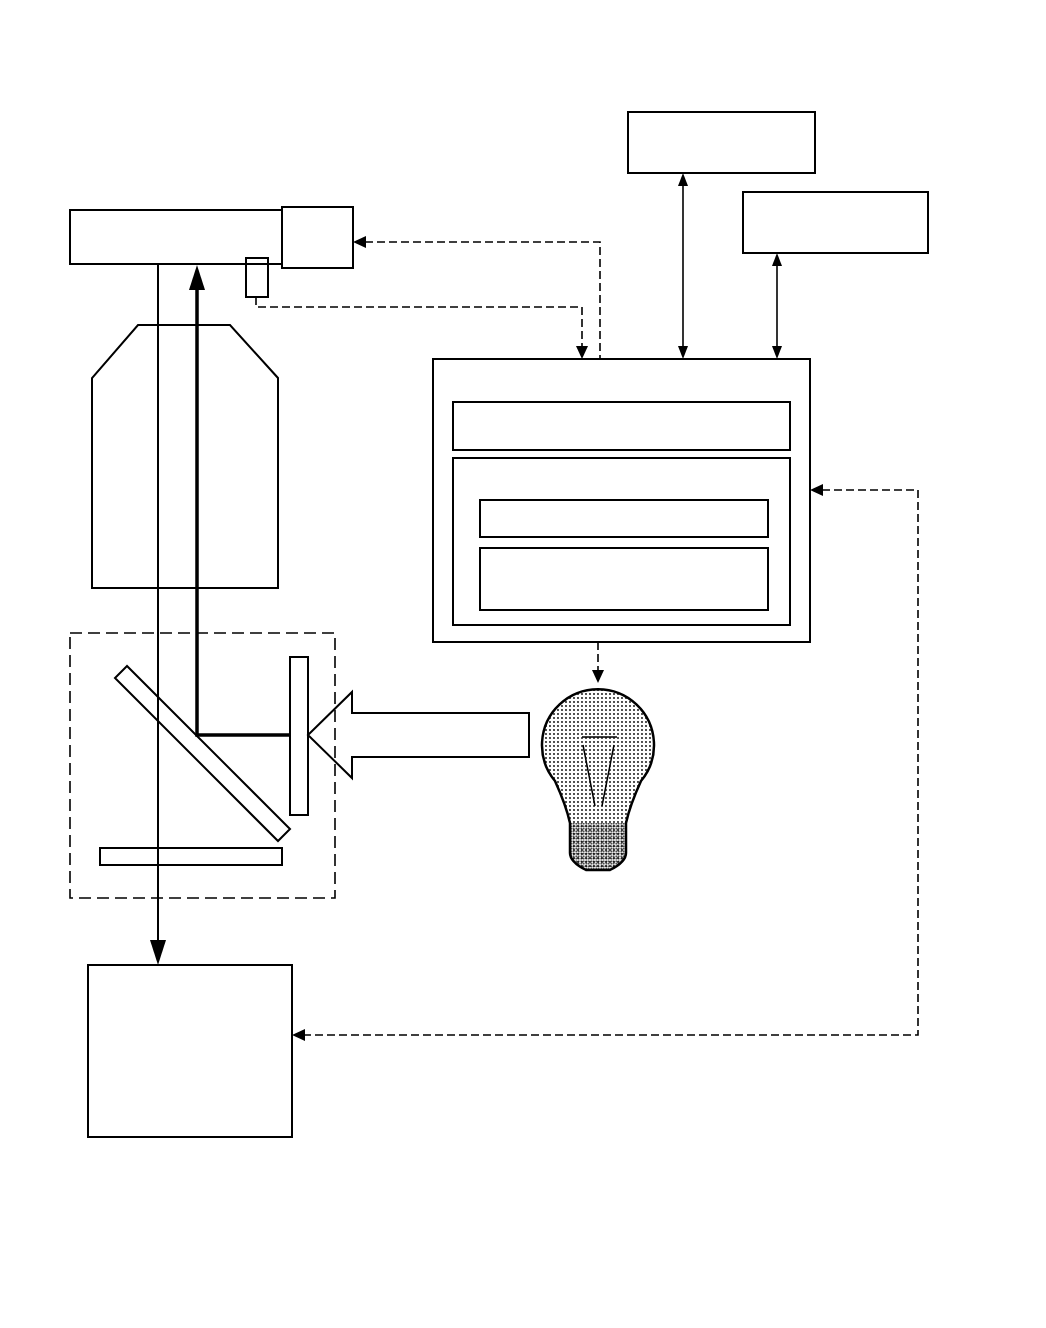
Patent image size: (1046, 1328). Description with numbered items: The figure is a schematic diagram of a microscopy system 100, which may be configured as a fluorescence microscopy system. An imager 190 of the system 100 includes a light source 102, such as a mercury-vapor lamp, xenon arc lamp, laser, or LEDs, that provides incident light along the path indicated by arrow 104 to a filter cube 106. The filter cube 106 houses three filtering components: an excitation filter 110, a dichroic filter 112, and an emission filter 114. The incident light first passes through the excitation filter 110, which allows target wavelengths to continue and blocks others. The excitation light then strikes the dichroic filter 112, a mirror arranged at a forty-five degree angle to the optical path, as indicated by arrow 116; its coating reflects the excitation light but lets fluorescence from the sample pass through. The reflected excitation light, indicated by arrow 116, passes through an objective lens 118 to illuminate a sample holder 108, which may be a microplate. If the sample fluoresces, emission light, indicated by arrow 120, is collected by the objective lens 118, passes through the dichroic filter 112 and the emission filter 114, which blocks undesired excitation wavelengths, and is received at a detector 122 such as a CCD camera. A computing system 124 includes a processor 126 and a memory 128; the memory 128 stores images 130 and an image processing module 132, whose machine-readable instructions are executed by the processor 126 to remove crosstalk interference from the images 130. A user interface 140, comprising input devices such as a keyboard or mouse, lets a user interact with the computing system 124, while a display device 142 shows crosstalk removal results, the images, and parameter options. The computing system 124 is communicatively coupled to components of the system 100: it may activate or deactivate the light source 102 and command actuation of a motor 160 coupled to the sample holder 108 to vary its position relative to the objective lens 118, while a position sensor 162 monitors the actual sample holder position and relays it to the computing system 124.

The microscopy system 100 is at (592, 36).
The imager 190 is at (400, 172).
The light source 102 is at (622, 690).
The arrow indicating path of incident light 104 is at (418, 712).
The filter cube 106 is at (298, 633).
The sample holder 108 is at (176, 237).
The excitation filter 110 is at (290, 698).
The dichroic filter 112 is at (203, 768).
The emission filter 114 is at (203, 867).
The arrow indicating excitation light 116 is at (198, 443).
The objective lens 118 is at (278, 392).
The arrow indicating emission light 120 is at (157, 445).
The detector 122 is at (190, 1051).
The computing system 124 is at (621, 500).
The processor 126 is at (621, 426).
The memory 128 is at (621, 541).
The images 130 is at (624, 518).
The image processing module 132 is at (624, 579).
The user interface 140 is at (721, 142).
The display device 142 is at (835, 222).
The motor 160 is at (317, 237).
The position sensor 162 is at (246, 272).